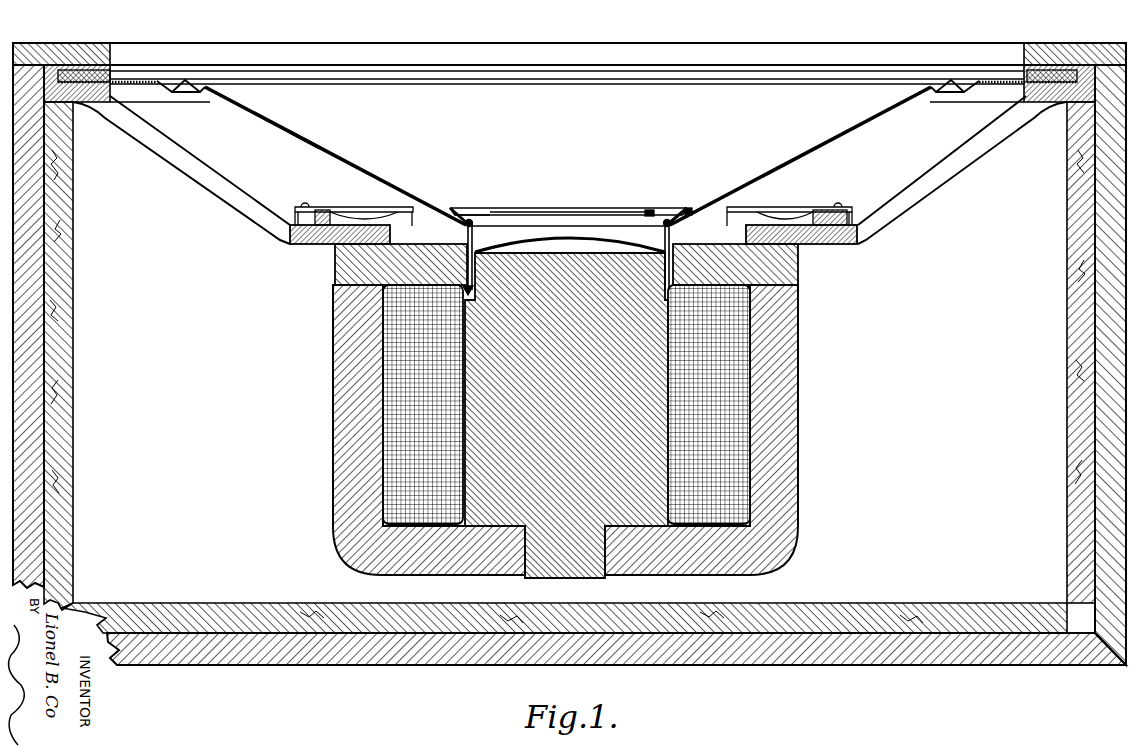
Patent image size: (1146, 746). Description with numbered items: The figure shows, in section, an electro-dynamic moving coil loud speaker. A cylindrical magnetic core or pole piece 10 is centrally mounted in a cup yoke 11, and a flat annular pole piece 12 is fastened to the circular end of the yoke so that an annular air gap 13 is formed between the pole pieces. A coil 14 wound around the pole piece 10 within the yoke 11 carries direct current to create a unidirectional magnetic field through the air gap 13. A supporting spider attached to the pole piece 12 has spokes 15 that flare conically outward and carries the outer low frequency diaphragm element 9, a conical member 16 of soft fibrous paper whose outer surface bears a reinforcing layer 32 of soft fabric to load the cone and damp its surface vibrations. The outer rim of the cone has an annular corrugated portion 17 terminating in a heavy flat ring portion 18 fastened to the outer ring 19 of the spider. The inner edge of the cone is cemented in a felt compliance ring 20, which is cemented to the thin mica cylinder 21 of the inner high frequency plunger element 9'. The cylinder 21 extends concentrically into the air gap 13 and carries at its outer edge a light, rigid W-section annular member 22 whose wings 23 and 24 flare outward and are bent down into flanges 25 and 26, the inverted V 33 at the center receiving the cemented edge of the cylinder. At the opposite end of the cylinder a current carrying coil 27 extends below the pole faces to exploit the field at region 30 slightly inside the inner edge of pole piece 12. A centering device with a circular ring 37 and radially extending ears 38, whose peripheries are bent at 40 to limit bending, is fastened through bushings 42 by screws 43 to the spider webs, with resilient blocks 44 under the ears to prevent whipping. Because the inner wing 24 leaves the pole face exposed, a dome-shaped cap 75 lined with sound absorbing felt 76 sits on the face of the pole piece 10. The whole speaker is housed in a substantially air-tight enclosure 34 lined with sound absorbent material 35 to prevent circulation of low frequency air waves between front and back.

The outer low frequency diaphragm element 9 is at (569, 62).
The inner high frequency plunger element 9' is at (497, 190).
The pole piece 10 is at (566, 415).
The cup yoke 11 is at (340, 488).
The annular pole piece 12 is at (340, 265).
The air gap 13 is at (568, 236).
The coil 14 is at (395, 404).
The spokes 15 is at (906, 198).
The conical member 16 is at (292, 137).
The annular corrugated portion 17 is at (163, 90).
The flat ring portion 18 is at (133, 80).
The outer ring 19 is at (95, 102).
The compliance ring 20 is at (467, 240).
The mica cylinder 21 is at (480, 251).
The annular member 22 is at (548, 208).
The outer wing 23 is at (688, 209).
The inner wing 24 is at (667, 222).
The flange 25 is at (700, 214).
The flange 26 is at (650, 214).
The current carrying coil 27 is at (474, 292).
The region 30 is at (467, 290).
The reinforcing layer 32 is at (308, 143).
The inverted V 33 is at (470, 221).
The enclosure 34 is at (1109, 185).
The sound absorbent material 35 is at (62, 457).
The circular ring 37 is at (412, 213).
The ears 38 is at (757, 208).
The bent peripheral portion 40 is at (790, 213).
The bushings 42 is at (855, 245).
The screws 43 is at (840, 210).
The blocks 44 is at (305, 244).
The dome-shaped cap 75 is at (577, 241).
The felt 76 is at (606, 246).